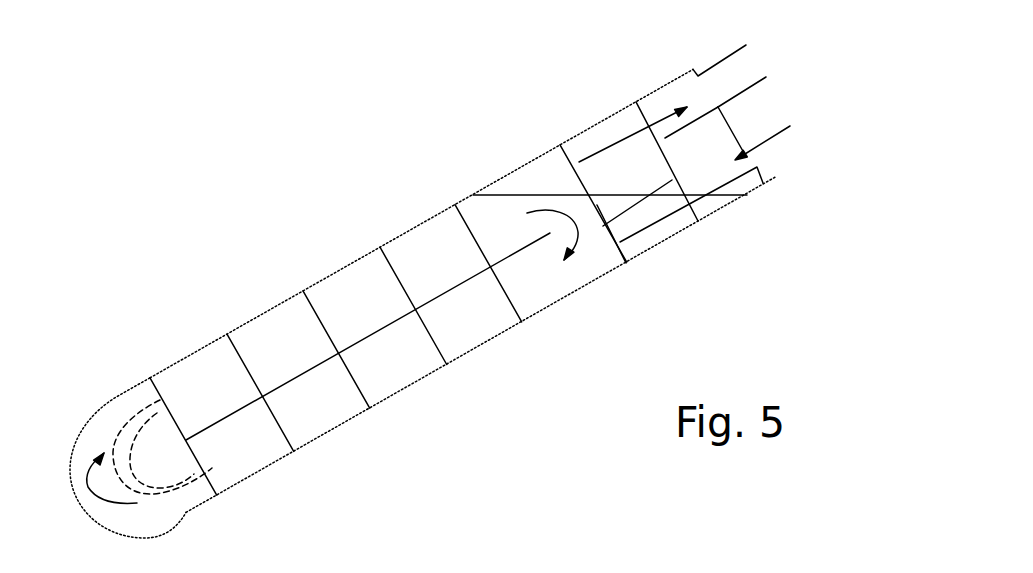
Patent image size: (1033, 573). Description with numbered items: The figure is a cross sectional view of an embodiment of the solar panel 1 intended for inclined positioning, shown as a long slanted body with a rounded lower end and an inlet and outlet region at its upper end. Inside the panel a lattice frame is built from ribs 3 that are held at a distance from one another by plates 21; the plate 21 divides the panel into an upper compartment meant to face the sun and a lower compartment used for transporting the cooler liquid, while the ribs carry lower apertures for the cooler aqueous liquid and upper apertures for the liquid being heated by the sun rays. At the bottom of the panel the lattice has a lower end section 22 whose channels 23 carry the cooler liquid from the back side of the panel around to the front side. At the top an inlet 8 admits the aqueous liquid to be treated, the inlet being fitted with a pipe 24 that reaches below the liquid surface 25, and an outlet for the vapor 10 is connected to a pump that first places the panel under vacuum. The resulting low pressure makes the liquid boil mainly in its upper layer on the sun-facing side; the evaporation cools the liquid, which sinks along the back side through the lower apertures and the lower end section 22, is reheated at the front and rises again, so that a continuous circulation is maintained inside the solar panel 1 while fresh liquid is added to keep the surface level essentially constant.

The belt strip 1 is at (453, 128).
The ribs 3 is at (240, 368).
The inlet 8 is at (762, 145).
The outlet for the vapor 10 is at (715, 64).
The plate 21 is at (300, 373).
The lower end section 22 is at (158, 523).
The inner loop layer 23 is at (175, 487).
The reinforcing plate 24 is at (593, 208).
The connecting pin 25 is at (684, 200).